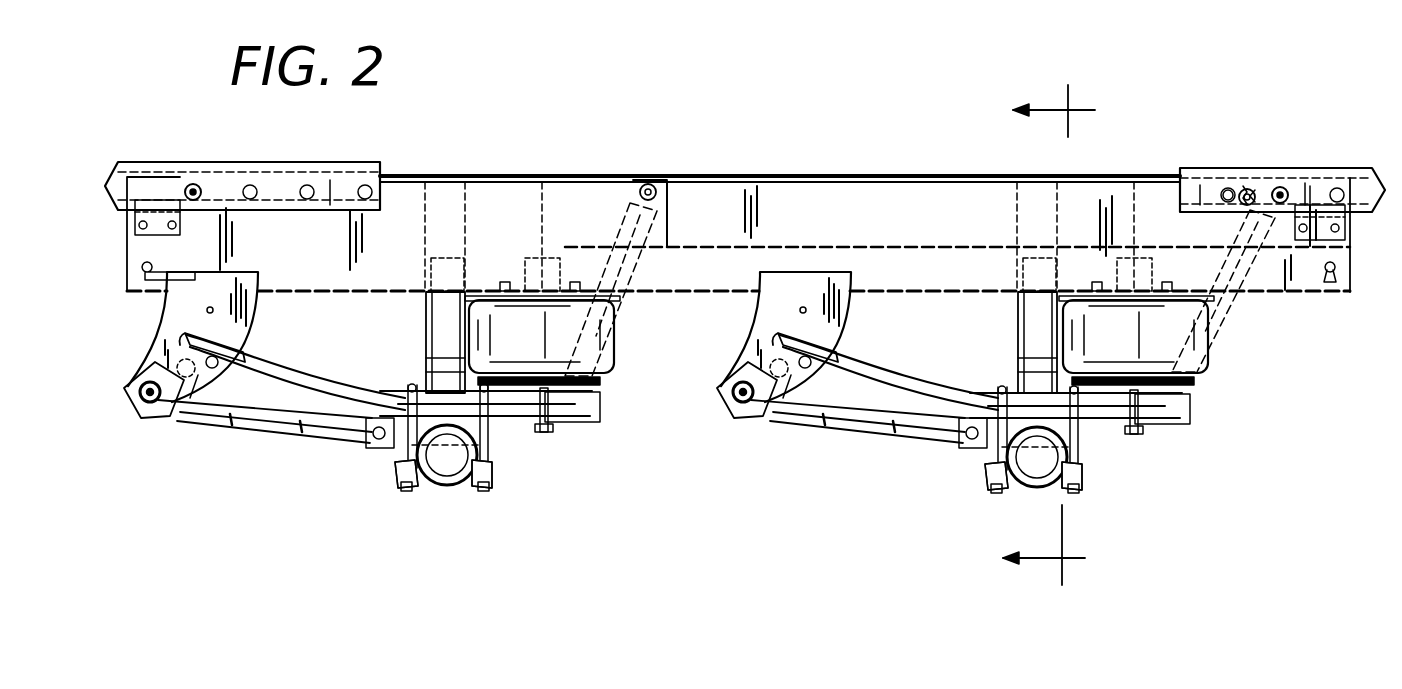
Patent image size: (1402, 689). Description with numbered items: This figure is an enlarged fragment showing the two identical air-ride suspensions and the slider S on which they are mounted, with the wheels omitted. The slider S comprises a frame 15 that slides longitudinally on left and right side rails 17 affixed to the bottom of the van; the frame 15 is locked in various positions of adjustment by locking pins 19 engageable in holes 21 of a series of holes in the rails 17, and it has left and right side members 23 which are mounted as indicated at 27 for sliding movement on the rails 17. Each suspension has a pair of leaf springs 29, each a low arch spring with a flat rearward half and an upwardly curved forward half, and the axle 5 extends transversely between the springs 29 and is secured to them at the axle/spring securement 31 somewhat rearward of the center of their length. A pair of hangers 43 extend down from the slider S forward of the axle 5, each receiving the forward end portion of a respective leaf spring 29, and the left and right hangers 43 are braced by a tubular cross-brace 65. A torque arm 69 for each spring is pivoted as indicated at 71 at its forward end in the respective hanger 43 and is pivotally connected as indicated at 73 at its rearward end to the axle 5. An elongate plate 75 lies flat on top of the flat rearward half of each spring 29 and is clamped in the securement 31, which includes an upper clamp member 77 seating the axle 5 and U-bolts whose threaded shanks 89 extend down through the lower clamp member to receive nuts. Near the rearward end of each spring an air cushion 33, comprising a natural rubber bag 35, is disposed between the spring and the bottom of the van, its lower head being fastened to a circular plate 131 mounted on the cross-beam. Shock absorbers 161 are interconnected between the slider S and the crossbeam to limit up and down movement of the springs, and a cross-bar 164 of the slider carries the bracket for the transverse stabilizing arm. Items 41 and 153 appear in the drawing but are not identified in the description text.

The axle 5 is at (444, 526).
The frame 15 is at (688, 186).
The side rails 17 is at (366, 182).
The locking pins 19 is at (194, 188).
The holes 21 is at (307, 188).
The side members 23 is at (836, 229).
The sliding mounting 27 is at (1345, 232).
The leaf spring 29 is at (332, 390).
The axle/spring securement 31 is at (397, 484).
The air cushion 33 is at (536, 354).
The rubber bag 35 is at (616, 342).
The bracket 41 is at (505, 290).
The hanger 43 is at (152, 410).
The tubular cross-brace 65 is at (165, 334).
The torque arm 69 is at (242, 414).
The pivot 71 is at (170, 414).
The pivotal connection 73 is at (376, 442).
The elongate plate 75 is at (420, 394).
The upper clamp member 77 is at (492, 428).
The threaded shanks 89 is at (405, 492).
The circular plate 131 is at (600, 392).
The bracket 153 is at (420, 316).
The shock absorber 161 is at (650, 272).
The cross-bar 164 is at (440, 260).
The slider S is at (808, 176).